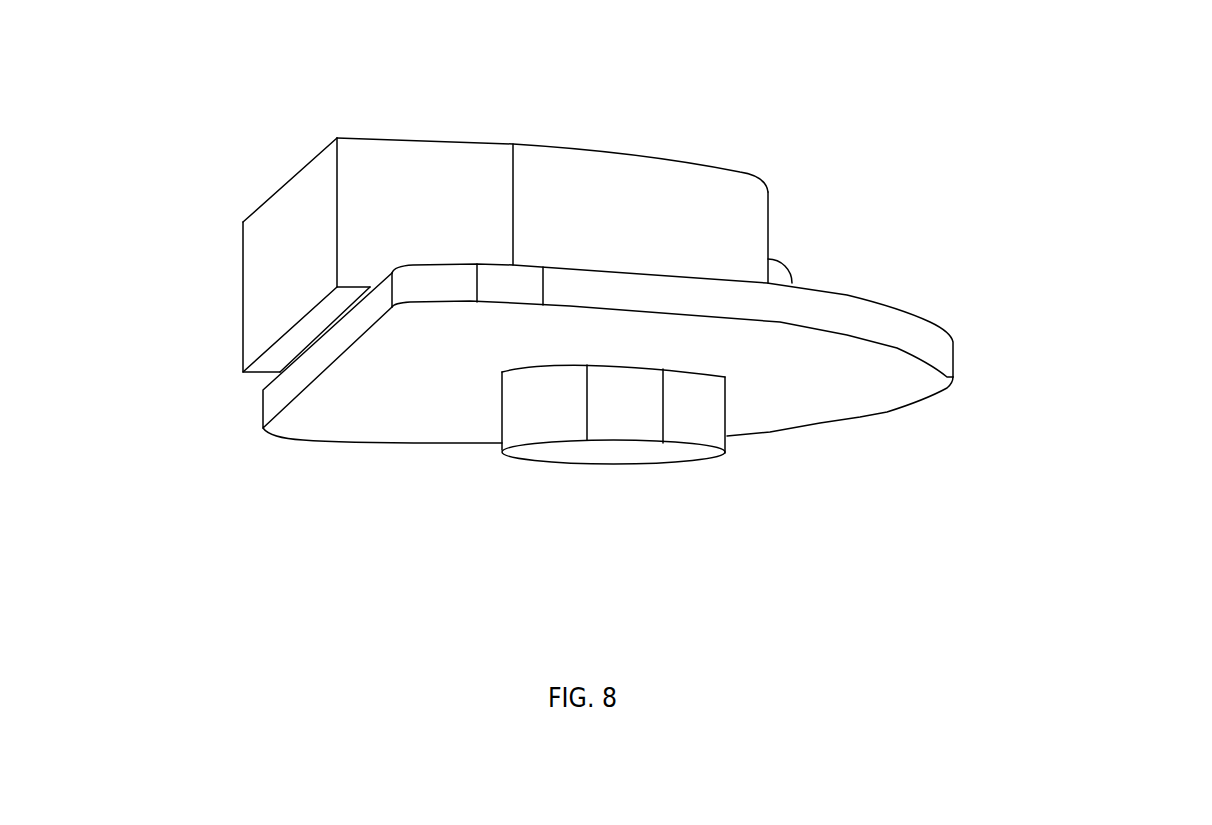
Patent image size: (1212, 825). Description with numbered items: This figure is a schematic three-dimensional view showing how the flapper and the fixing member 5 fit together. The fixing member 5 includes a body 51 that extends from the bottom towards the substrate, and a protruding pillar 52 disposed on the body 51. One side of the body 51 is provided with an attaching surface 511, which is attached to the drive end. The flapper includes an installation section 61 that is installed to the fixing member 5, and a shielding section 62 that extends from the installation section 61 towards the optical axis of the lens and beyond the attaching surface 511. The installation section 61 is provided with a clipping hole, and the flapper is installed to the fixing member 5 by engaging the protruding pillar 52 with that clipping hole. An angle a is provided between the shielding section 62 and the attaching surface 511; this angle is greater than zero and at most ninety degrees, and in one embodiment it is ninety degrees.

The fixing member 5 is at (143, 297).
The body 51 is at (383, 228).
The attaching surface 511 is at (770, 205).
The protruding pillar 52 is at (568, 447).
The installation section 61 is at (735, 385).
The shielding section 62 is at (878, 375).
The angle α a is at (790, 262).